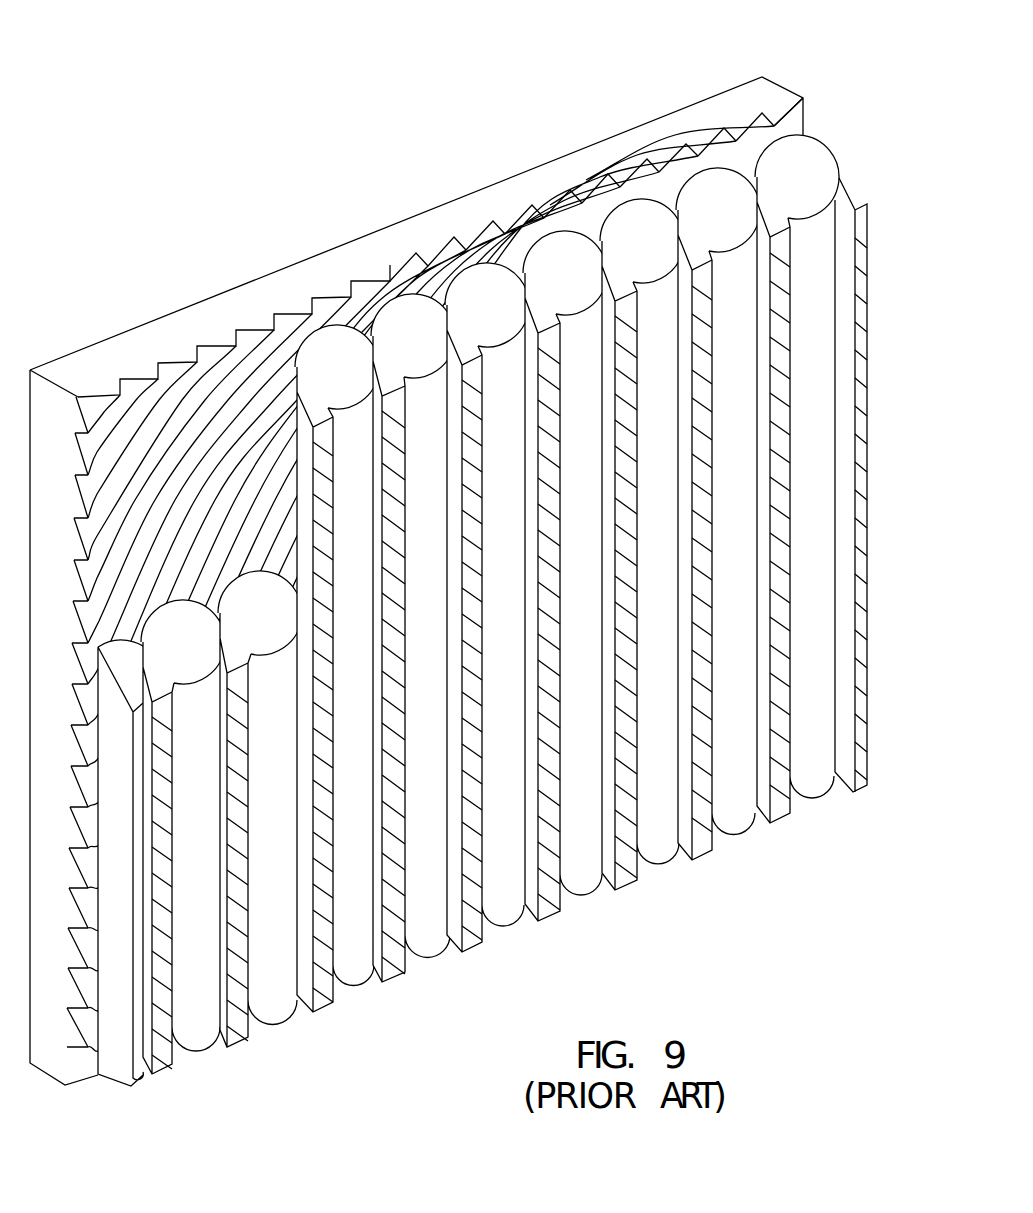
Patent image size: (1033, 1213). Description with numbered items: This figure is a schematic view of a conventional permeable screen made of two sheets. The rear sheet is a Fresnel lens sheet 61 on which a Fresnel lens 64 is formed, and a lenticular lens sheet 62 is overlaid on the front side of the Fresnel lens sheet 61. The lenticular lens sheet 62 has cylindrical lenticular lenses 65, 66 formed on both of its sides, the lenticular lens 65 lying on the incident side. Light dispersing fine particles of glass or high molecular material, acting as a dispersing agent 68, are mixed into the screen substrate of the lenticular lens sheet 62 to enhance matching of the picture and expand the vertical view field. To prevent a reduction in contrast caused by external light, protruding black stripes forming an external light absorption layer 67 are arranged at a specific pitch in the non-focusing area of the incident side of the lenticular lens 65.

The Fresnel lens sheet 61 is at (748, 96).
The lenticular lens sheet 62 is at (843, 178).
The Fresnel lens 64 is at (712, 133).
The lenticular lens 65 is at (648, 150).
The lenticular lens 66 is at (735, 820).
The external light absorption layer 67 is at (868, 253).
The dispersing agent 68 is at (826, 168).